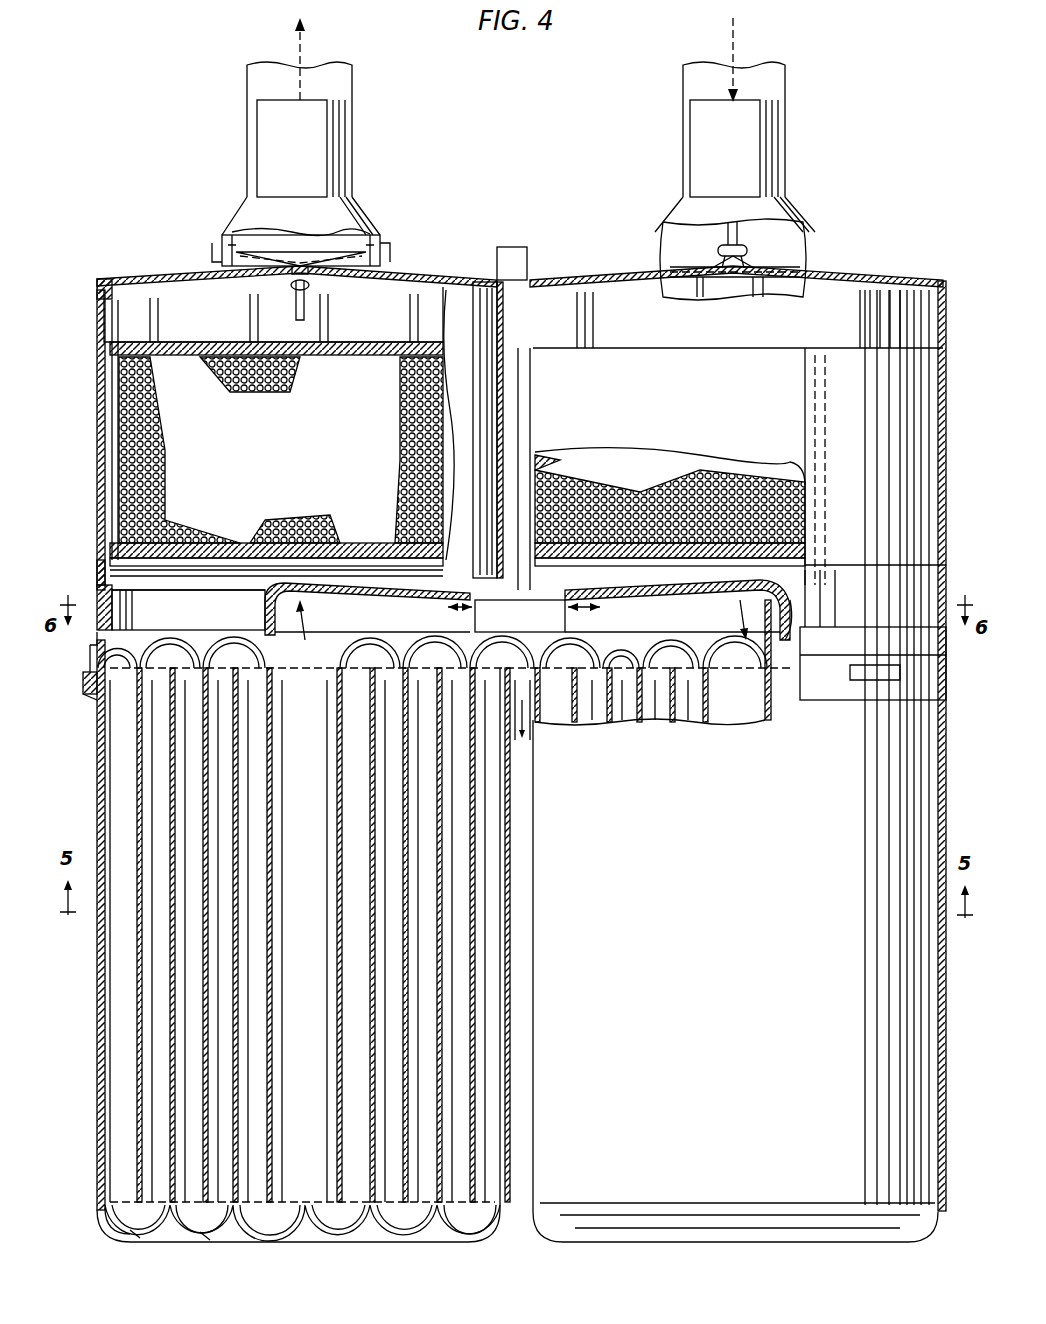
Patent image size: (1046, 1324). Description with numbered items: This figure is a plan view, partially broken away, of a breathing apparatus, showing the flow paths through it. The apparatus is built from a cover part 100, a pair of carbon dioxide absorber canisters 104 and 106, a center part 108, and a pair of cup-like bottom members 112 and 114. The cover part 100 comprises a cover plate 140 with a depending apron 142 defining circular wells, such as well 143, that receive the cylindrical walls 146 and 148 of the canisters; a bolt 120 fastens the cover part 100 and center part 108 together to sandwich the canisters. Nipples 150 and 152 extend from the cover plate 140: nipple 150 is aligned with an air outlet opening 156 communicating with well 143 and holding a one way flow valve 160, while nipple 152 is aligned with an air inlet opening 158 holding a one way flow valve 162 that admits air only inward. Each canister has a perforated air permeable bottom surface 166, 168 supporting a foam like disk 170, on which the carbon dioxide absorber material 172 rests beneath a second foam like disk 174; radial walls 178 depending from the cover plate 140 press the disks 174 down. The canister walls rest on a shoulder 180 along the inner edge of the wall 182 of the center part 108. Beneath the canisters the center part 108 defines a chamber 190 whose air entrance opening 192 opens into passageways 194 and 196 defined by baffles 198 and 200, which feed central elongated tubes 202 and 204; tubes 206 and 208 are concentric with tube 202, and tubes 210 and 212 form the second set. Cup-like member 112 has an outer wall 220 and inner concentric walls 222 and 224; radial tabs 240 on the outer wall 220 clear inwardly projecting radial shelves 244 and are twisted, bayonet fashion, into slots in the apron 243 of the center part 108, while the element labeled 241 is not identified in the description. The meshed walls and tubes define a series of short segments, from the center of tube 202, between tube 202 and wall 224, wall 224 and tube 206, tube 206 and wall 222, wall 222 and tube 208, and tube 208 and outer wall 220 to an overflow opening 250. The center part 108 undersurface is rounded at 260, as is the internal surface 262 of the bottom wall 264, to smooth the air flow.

The cover part 100 is at (427, 279).
The CO2 absorber material canister 104 is at (100, 442).
The CO2 absorber material canister 106 is at (931, 464).
The center part 108 is at (99, 565).
The cup-like bottom member 112 is at (99, 1167).
The cup-like bottom member 114 is at (740, 1114).
The bolt 120 is at (513, 247).
The cover plate 140 is at (895, 282).
The apron 142 is at (940, 338).
The circular well 143 is at (100, 290).
The cylindrical wall 146 is at (112, 500).
The cylindrical wall 148 is at (560, 452).
The nipple 150 is at (262, 158).
The nipple 152 is at (785, 143).
The air outlet opening 156 is at (232, 242).
The air inlet opening 158 is at (770, 243).
The one way flow valve 160 is at (325, 252).
The one way flow valve 162 is at (724, 290).
The perforated air permeable bottom surface 166 is at (392, 546).
The perforated air permeable bottom surface 168 is at (775, 556).
The air permeable foam like disk 170 is at (236, 562).
The CO2 absorber material 172 is at (306, 470).
The second foam like disk 174 is at (355, 355).
The radial wall 178 is at (152, 300).
The shoulder 180 is at (133, 610).
The wall 182 is at (100, 593).
The chamber 190 is at (238, 631).
The air entrance opening 192 is at (530, 627).
The passageway 194 is at (396, 621).
The passageway 196 is at (678, 621).
The baffle 198 is at (275, 598).
The baffle 200 is at (787, 612).
The central elongated tube 202 is at (272, 850).
The central elongated tube 204 is at (782, 720).
The tube 206 is at (205, 1010).
The tube 208 is at (140, 1108).
The tube 210 is at (641, 727).
The tube 212 is at (587, 727).
The outer wall 220 is at (97, 1052).
The inner concentric wall 222 is at (172, 1045).
The inner concentric wall 224 is at (237, 946).
The radial tab 240 is at (93, 680).
The bracket 241 is at (85, 680).
The apron 243 is at (960, 700).
The inwardly projecting radial shelf 244 is at (98, 705).
The overflow opening 250 is at (92, 645).
The rounded undersurface 260 is at (150, 648).
The internal surface 262 is at (185, 1240).
The bottom wall 264 is at (268, 1240).